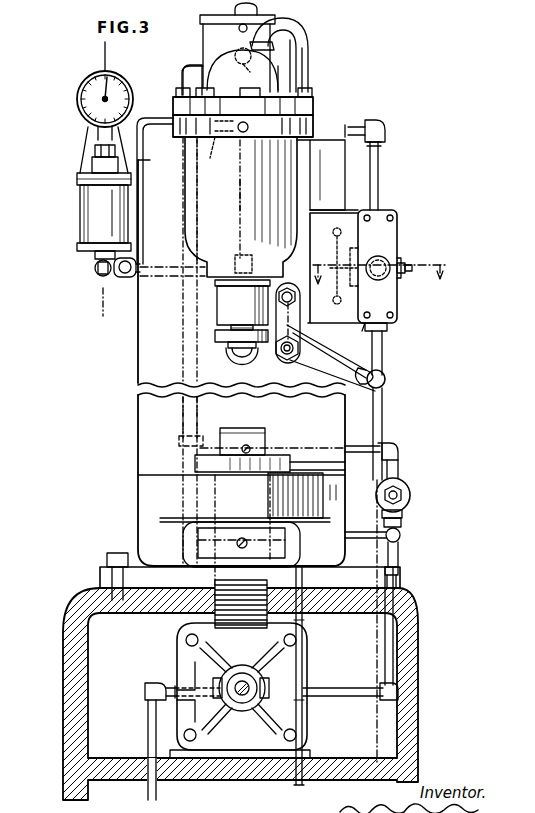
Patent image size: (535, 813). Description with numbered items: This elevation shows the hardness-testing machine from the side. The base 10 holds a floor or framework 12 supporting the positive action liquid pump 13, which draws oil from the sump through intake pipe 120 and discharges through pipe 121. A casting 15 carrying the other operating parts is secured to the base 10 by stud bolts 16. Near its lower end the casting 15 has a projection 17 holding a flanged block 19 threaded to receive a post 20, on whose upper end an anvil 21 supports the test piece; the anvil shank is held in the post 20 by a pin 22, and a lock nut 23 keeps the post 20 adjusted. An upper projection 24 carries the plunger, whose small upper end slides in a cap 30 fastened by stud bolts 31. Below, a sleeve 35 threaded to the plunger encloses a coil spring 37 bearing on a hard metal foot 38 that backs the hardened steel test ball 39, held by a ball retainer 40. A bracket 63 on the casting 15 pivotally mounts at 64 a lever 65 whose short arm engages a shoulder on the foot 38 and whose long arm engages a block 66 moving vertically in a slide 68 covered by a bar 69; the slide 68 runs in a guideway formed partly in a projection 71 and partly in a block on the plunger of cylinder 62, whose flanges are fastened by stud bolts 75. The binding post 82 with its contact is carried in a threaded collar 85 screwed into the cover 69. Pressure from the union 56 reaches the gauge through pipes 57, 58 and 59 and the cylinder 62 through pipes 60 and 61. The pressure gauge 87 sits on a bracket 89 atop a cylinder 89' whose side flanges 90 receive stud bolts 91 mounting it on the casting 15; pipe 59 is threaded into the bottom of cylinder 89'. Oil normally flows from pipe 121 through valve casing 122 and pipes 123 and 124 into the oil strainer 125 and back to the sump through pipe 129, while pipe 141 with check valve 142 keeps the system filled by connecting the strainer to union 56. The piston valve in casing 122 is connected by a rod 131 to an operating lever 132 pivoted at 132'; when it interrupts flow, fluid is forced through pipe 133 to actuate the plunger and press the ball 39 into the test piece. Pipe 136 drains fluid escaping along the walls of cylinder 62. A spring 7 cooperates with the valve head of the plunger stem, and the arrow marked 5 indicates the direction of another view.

The section line 5- 5 is at (377, 284).
The spring 7 is at (102, 52).
The base 10 is at (67, 786).
The floor or framework 12 is at (234, 775).
The positive action liquid pump 13 is at (195, 672).
The casting 15 is at (138, 425).
The stud bolts 16 is at (115, 553).
The projection 17 is at (248, 497).
The flanged block 19 is at (205, 462).
The post 20 is at (215, 600).
The anvil 21 is at (243, 432).
The pin 22 is at (250, 449).
The lock nut 23 is at (200, 543).
The upper projection 24 is at (241, 207).
The cap 30 is at (278, 67).
The stud bolts 31 is at (175, 92).
The sleeve 35 is at (242, 302).
The coil spring 37 is at (229, 327).
The foot 38 is at (222, 337).
The test ball 39 is at (240, 370).
The ball retainer 40 is at (228, 359).
The fitting 56 is at (243, 117).
The pipe 57 is at (240, 193).
The pipe 58 is at (155, 283).
The pipe 59 is at (95, 272).
The pipe 60 is at (355, 125).
The pipe 61 is at (379, 178).
The cylinder 62 is at (397, 252).
The bracket 63 is at (292, 326).
The pivot 64 is at (323, 363).
The lever 65 is at (385, 388).
The block 66 is at (382, 352).
The slide 68 is at (362, 332).
The plate or bar 69 is at (388, 329).
The projection 71 is at (325, 222).
The stud bolts 75 is at (345, 278).
The binding post 82 is at (412, 267).
The threaded collar 85 is at (400, 273).
The pressure gauge 87 is at (78, 98).
The bracket 89 is at (89, 156).
The cylinder 89' is at (90, 222).
The side flanges 90 is at (144, 196).
The stud bolts 91 is at (120, 233).
The pipe 120 is at (148, 737).
The pipe 121 is at (350, 683).
The valve casing 122 is at (409, 487).
The pipe 123 is at (358, 447).
The pipe 124 is at (182, 68).
The oil strainer 125 is at (215, 42).
The pipe 129 is at (306, 54).
The rod 131 is at (384, 500).
The operating lever 132 is at (375, 516).
The pivot 132' is at (414, 577).
The pipe 133 is at (298, 24).
The pipe 136 is at (383, 411).
The pipe 141 is at (226, 82).
The check valve 142 is at (214, 154).